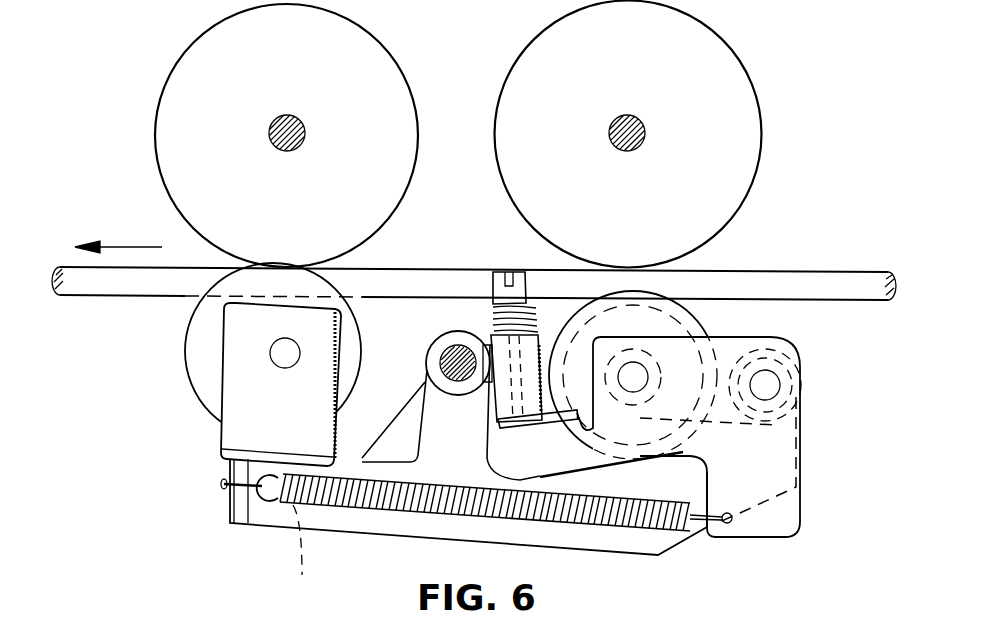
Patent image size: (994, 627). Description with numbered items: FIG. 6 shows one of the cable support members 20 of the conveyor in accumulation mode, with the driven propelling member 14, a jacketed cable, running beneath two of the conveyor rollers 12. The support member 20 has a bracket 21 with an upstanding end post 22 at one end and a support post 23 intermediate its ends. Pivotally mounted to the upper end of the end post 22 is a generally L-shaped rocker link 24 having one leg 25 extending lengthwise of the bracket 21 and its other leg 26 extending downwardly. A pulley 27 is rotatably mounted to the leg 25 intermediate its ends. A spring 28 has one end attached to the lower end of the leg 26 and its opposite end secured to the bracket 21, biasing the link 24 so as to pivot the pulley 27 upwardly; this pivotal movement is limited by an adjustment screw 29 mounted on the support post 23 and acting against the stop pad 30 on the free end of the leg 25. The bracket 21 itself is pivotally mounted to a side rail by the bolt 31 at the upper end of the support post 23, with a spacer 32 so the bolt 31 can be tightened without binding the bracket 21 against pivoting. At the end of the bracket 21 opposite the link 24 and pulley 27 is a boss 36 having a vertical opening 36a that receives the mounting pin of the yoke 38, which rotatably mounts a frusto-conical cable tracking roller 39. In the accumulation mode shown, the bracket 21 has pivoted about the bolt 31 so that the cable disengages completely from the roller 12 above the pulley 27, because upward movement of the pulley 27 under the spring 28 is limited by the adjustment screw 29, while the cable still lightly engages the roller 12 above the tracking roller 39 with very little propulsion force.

The rollers 12 is at (402, 63).
The driven propelling member 14 is at (870, 270).
The support member 20 is at (268, 546).
The bracket 21 is at (405, 540).
The end post 22 is at (803, 458).
The support post 23 is at (418, 430).
The rocker link 24 is at (804, 518).
The leg 25 is at (757, 343).
The other leg 26 is at (770, 538).
The pulley 27 is at (703, 327).
The spring 28 is at (590, 528).
The adjustment screw 29 is at (513, 272).
The stop pad 30 is at (530, 428).
The bolt 31 is at (465, 343).
The spacer 32 is at (442, 347).
The boss 36 is at (228, 473).
The vertical opening 36a is at (310, 558).
The yoke 38 is at (220, 432).
The cable tracking roller 39 is at (185, 348).